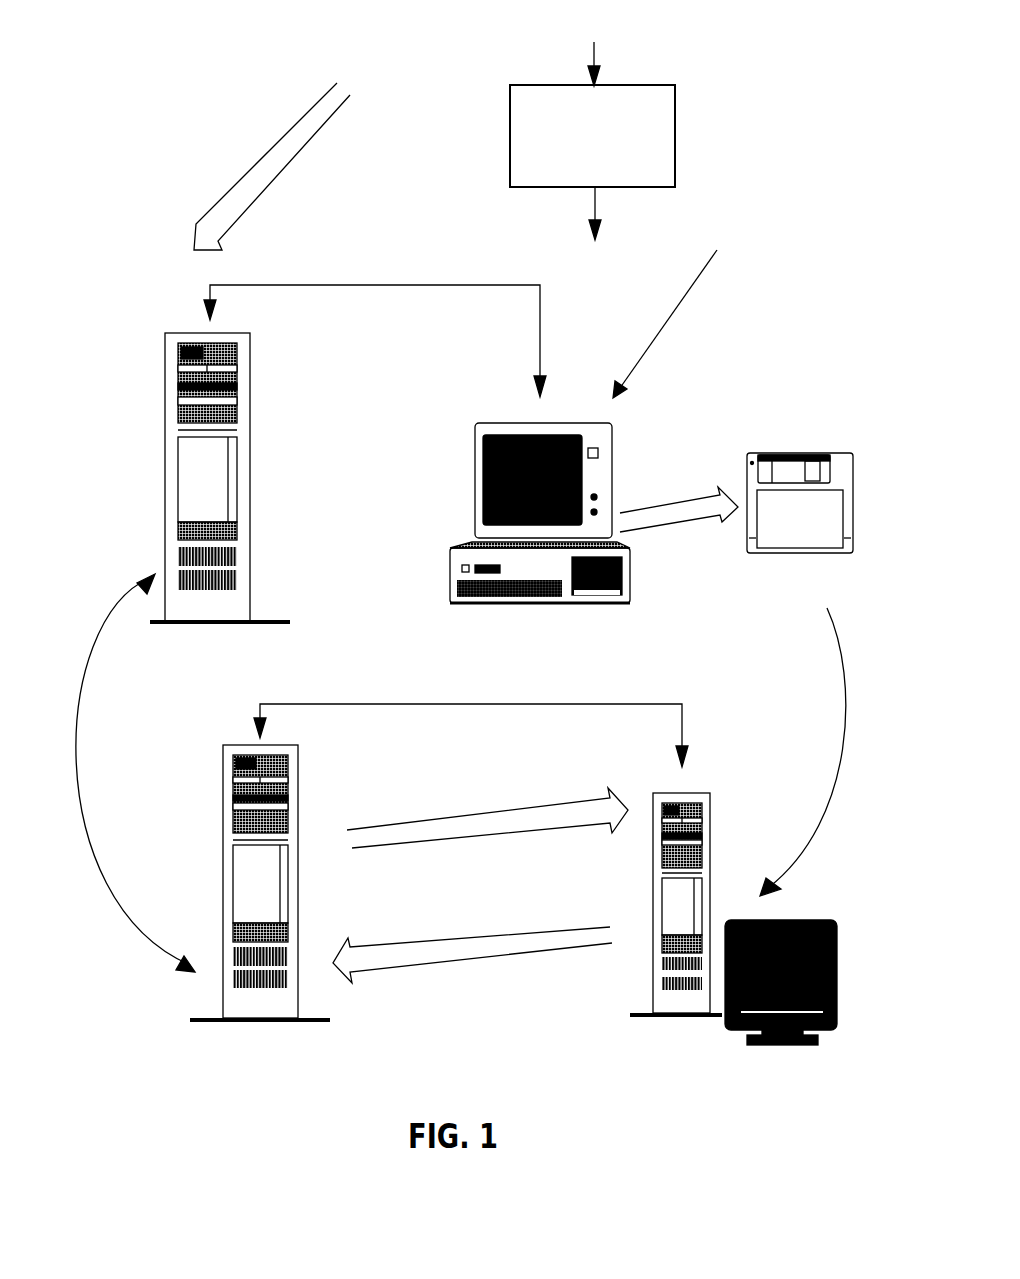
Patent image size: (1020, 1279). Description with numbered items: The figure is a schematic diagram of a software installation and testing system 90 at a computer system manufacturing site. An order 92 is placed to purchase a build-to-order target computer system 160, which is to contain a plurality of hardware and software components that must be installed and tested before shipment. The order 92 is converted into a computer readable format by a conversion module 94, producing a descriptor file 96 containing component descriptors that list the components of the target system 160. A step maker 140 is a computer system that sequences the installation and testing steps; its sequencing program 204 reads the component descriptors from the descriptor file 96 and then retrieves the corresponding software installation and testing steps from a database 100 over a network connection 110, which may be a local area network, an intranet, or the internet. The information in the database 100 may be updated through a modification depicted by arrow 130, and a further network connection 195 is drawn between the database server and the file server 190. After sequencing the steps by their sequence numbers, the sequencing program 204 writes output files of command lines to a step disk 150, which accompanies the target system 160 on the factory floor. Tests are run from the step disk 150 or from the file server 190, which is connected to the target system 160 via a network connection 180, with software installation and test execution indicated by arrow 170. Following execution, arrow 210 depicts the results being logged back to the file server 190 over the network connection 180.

The software installation and testing system 90 is at (131, 84).
The order 92 is at (637, 33).
The conversion module 94 is at (675, 133).
The descriptor file 96 is at (653, 238).
The database 100 is at (187, 457).
The network connection 110 is at (354, 285).
The modification 130 is at (268, 155).
The step maker 140 is at (612, 463).
The step disk 150 is at (778, 462).
The target computer system 160 is at (780, 917).
The install software run tests 170 is at (448, 818).
The network connection 180 is at (471, 720).
The file server 190 is at (222, 871).
The network connection 195 is at (76, 818).
The sequencing program 204 is at (626, 594).
The arrow 210 is at (454, 942).